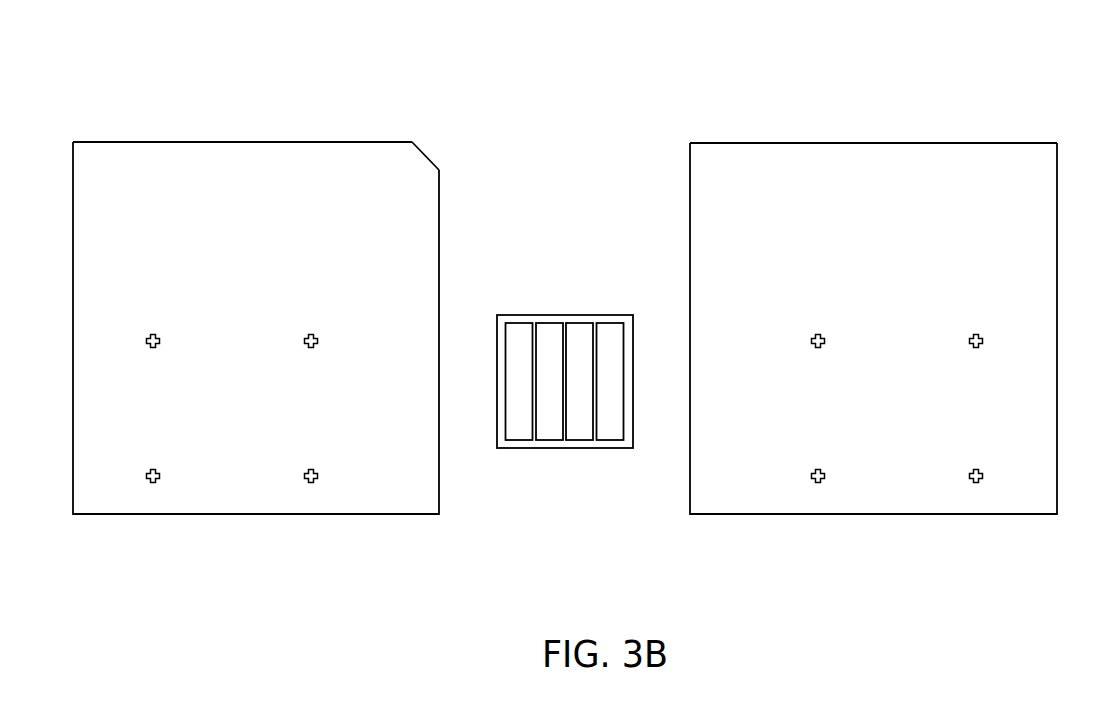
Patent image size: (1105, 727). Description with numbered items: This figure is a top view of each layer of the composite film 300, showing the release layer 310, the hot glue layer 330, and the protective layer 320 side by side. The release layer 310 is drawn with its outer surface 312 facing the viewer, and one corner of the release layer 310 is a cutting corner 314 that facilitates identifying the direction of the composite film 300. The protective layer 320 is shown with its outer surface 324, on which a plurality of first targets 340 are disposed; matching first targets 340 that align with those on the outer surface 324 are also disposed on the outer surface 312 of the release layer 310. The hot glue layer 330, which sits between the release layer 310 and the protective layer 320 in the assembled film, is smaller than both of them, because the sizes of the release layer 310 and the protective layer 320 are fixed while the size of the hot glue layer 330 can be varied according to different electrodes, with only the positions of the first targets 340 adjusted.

The composite film 300 is at (981, 84).
The release layer 310 is at (261, 315).
The outer surface of the release layer 312 is at (247, 158).
The cutting corner 314 is at (430, 158).
The protective layer 320 is at (873, 314).
The outer surface of the protective layer 324 is at (757, 160).
The hot glue layer 330 is at (588, 503).
The first targets 340 is at (148, 335).